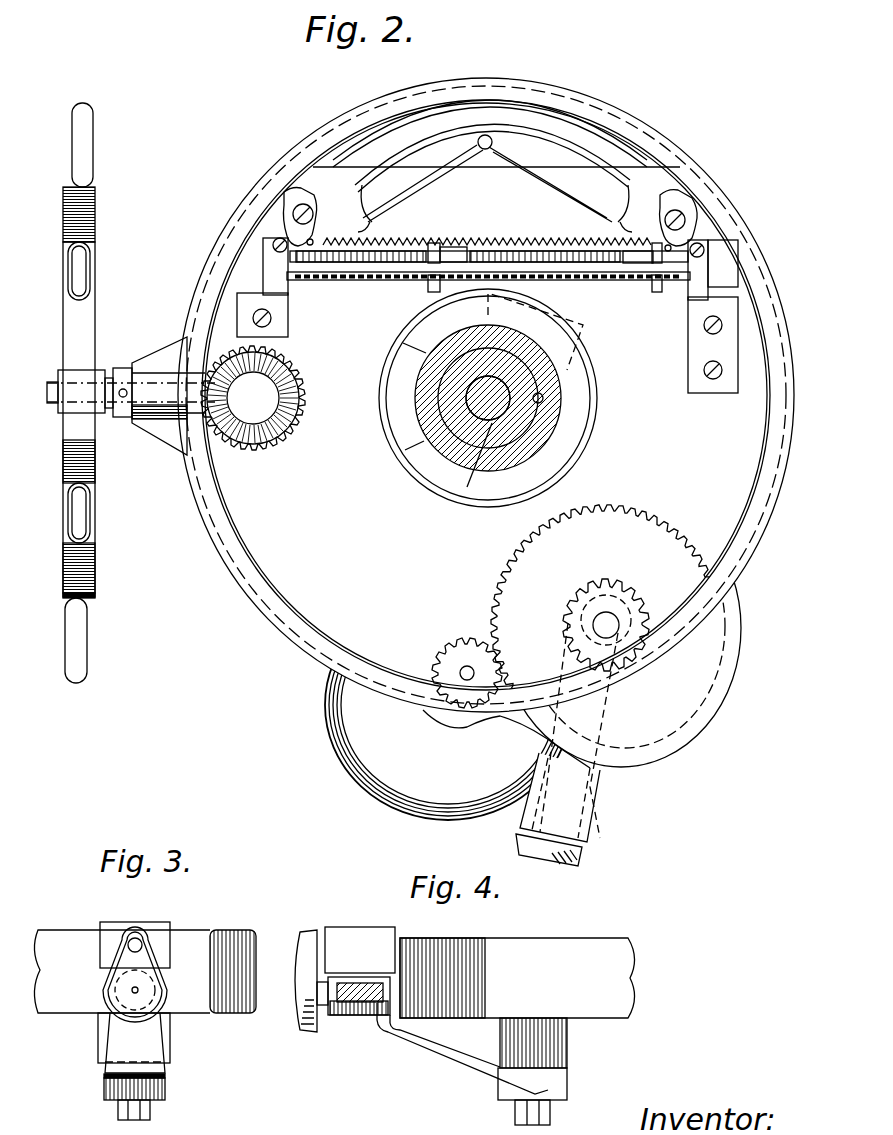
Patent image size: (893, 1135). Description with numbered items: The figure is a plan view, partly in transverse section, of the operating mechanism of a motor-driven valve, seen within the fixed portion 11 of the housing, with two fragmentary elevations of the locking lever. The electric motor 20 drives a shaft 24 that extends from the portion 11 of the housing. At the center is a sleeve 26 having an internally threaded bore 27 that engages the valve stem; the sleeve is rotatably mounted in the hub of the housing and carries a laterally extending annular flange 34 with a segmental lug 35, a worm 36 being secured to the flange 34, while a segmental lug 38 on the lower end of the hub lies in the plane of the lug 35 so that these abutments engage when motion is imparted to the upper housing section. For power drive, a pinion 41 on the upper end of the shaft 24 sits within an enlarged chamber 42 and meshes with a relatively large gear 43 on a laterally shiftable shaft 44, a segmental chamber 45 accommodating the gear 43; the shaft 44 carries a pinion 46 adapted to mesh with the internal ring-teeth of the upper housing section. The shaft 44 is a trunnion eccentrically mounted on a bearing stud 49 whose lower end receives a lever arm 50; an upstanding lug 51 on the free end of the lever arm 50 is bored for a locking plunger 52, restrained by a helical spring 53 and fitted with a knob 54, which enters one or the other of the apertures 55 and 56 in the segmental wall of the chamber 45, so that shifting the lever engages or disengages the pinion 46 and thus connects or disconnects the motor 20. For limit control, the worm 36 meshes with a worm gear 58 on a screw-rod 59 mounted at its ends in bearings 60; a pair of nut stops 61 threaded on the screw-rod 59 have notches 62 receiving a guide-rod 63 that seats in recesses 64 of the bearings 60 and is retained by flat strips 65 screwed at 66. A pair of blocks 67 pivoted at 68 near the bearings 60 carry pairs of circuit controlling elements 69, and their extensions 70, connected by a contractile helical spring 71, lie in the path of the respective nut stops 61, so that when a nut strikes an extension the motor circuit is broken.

In FIG. 2, the portion of the housing 11 is at (770, 522).
In FIG. 2, the electric motor 20 is at (372, 760).
In FIG. 2, the shaft 24 is at (468, 665).
In FIG. 2, the sleeve 26 is at (562, 413).
In FIG. 2, the internally threaded bore 27 is at (470, 490).
In FIG. 2, the annular flange 34 is at (403, 343).
In FIG. 2, the lug 35 is at (392, 396).
In FIG. 2, the worm 36 is at (410, 470).
In FIG. 2, the segmental lug 38 is at (585, 326).
In FIG. 2, the pinion 41 is at (440, 660).
In FIG. 2, the enlarged chamber 42 is at (466, 722).
In FIG. 2, the gear 43 is at (660, 518).
In FIG. 2, the laterally shiftable shaft 44 is at (612, 618).
In FIG. 2, the segmental chamber 45 is at (732, 700).
In FIG. 2, the pinion 46 is at (606, 580).
In FIG. 2, the bearing stud 49 is at (582, 612).
In FIG. 2, the lever arm 50 is at (606, 772).
In FIG. 3, the lever arm 50 is at (145, 1040).
In FIG. 4, the lever arm 50 is at (428, 1050).
In FIG. 4, the upstanding lug 51 is at (380, 1015).
In FIG. 2, the locking plunger 52 is at (584, 848).
In FIG. 4, the locking plunger 52 is at (320, 1010).
In FIG. 4, the helical spring 53 is at (346, 1015).
In FIG. 2, the knob 54 is at (560, 866).
In FIG. 3, the knob 54 is at (170, 1016).
In FIG. 4, the knob 54 is at (300, 1008).
In FIG. 2, the aperture 55 is at (600, 790).
In FIG. 4, the aperture 55 is at (426, 1031).
In FIG. 2, the aperture 56 is at (726, 618).
In FIG. 2, the worm gear 58 is at (492, 170).
In FIG. 2, the screw-rod 59 is at (362, 281).
In FIG. 2, the bearings 60 is at (210, 246).
In FIG. 2, the nut stops 61 is at (470, 250).
In FIG. 2, the notches 62 is at (432, 243).
In FIG. 2, the guide-rod 63 is at (575, 251).
In FIG. 2, the recesses 64 is at (237, 280).
In FIG. 2, the flat strips 65 is at (292, 290).
In FIG. 2, the screw 66 is at (265, 240).
In FIG. 2, the blocks 67 is at (304, 198).
In FIG. 2, the pivot 68 is at (316, 205).
In FIG. 2, the circuit controlling elements 69 is at (364, 224).
In FIG. 2, the extensions 70 is at (314, 243).
In FIG. 2, the contractile helical spring 71 is at (532, 172).